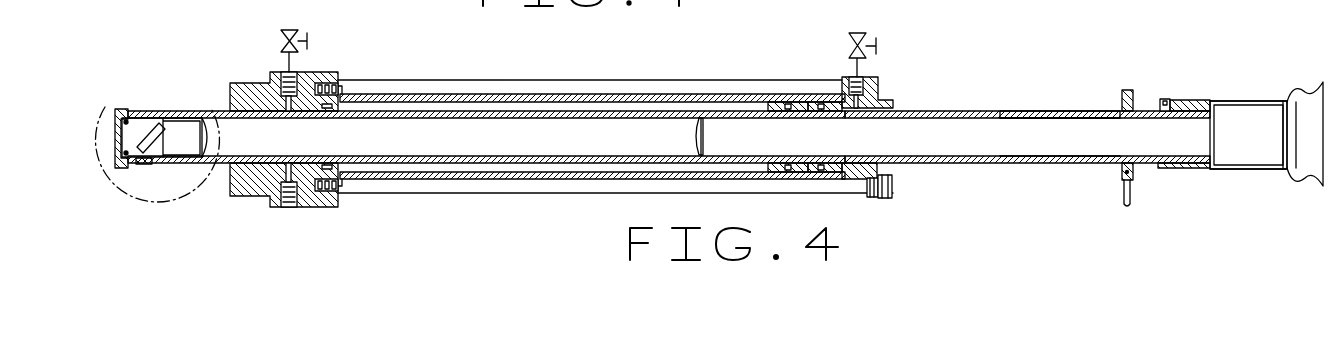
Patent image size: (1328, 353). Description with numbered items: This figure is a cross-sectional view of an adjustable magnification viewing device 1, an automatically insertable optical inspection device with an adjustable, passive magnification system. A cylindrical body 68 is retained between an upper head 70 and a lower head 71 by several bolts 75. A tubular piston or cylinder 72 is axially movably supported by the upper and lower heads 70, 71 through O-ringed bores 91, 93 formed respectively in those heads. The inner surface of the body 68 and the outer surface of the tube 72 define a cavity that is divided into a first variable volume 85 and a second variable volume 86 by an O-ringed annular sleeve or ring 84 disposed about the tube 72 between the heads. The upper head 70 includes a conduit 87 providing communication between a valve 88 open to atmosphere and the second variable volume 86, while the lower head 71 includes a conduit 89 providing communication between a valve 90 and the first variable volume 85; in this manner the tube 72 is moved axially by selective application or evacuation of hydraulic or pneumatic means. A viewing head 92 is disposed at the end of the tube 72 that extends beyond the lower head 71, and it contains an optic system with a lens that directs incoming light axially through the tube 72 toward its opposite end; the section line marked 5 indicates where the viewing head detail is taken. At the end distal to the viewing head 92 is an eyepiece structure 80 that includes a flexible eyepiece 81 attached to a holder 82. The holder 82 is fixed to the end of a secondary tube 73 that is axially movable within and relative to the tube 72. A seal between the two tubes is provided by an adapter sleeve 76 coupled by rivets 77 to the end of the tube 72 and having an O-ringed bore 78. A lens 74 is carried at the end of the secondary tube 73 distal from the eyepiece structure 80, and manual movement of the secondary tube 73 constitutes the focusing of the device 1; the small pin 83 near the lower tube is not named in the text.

The adjustable magnification viewing device 1 is at (1082, 184).
The section line 5- 5 is at (103, 108).
The cylindrical body 68 is at (448, 95).
The upper head 70 is at (893, 167).
The lower head 71 is at (247, 193).
The tubular piston or cylinder 72 is at (970, 110).
The secondary tube 73 is at (1054, 110).
The lens 74 is at (692, 137).
The bolts 75 is at (393, 187).
The adapter sleeve 76 is at (1180, 100).
The rivets 77 is at (1167, 98).
The O-ringed bore 78 is at (1203, 100).
The eyepiece structure 80 is at (1262, 190).
The flexible eyepiece 81 is at (1313, 90).
The holder 82 is at (1235, 167).
The locking pin 83 is at (1131, 190).
The O-ringed annular sleeve or ring 84 is at (772, 101).
The first variable volume 85 is at (537, 103).
The second variable volume 86 is at (815, 102).
The conduit 87 is at (862, 76).
The valve 88 is at (857, 33).
The conduit 89 is at (286, 72).
The valve 90 is at (290, 30).
The O-ringed bore 91 is at (880, 98).
The viewing head 92 is at (168, 50).
The O-ringed bore 93 is at (322, 80).